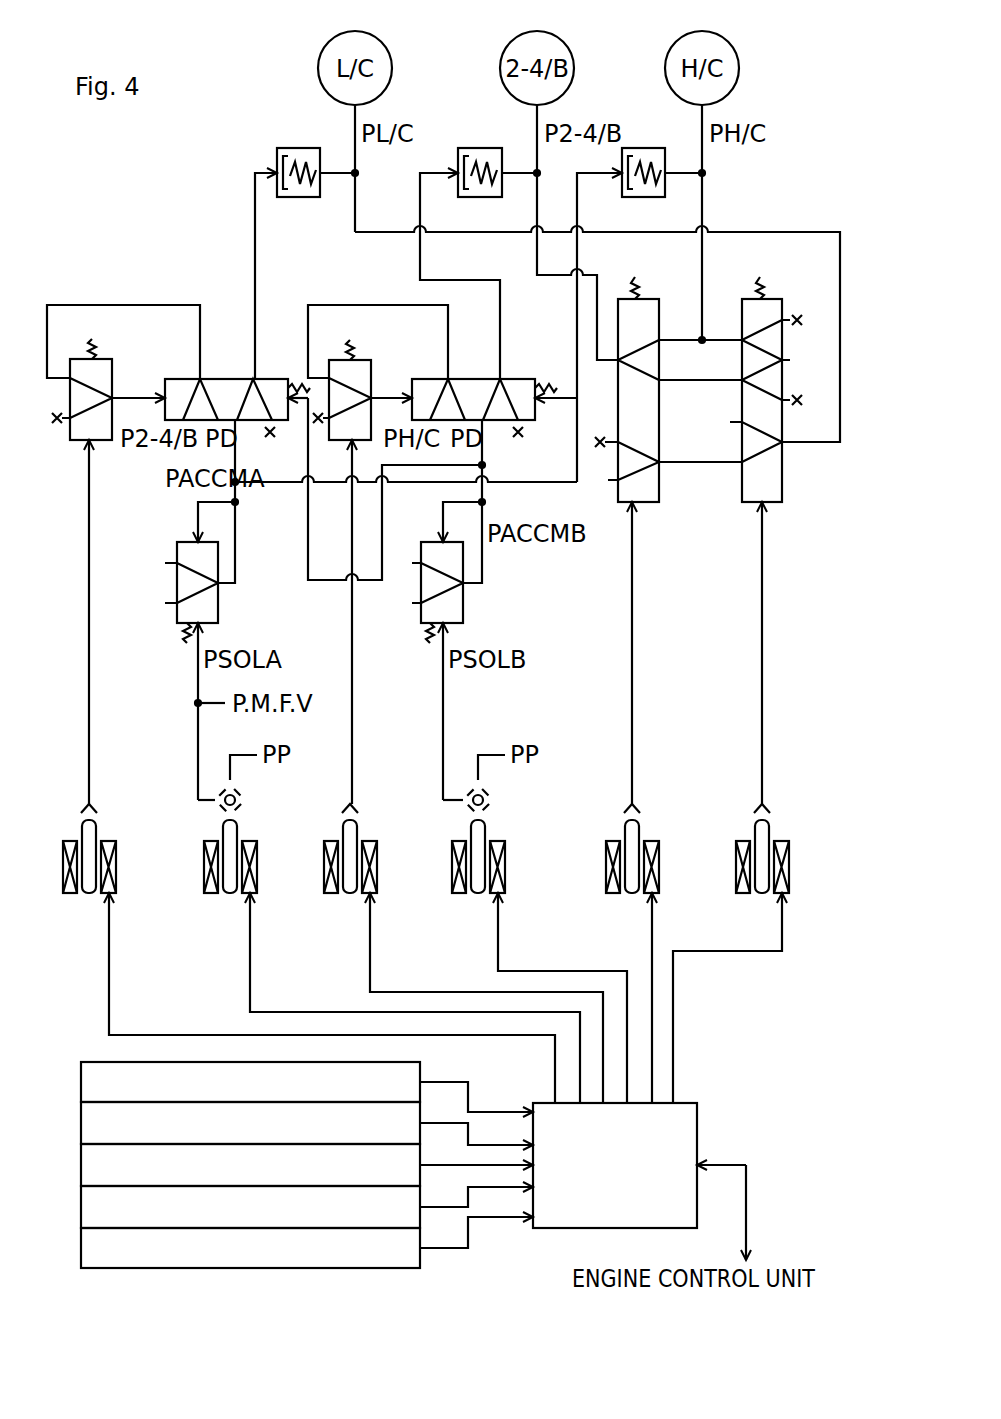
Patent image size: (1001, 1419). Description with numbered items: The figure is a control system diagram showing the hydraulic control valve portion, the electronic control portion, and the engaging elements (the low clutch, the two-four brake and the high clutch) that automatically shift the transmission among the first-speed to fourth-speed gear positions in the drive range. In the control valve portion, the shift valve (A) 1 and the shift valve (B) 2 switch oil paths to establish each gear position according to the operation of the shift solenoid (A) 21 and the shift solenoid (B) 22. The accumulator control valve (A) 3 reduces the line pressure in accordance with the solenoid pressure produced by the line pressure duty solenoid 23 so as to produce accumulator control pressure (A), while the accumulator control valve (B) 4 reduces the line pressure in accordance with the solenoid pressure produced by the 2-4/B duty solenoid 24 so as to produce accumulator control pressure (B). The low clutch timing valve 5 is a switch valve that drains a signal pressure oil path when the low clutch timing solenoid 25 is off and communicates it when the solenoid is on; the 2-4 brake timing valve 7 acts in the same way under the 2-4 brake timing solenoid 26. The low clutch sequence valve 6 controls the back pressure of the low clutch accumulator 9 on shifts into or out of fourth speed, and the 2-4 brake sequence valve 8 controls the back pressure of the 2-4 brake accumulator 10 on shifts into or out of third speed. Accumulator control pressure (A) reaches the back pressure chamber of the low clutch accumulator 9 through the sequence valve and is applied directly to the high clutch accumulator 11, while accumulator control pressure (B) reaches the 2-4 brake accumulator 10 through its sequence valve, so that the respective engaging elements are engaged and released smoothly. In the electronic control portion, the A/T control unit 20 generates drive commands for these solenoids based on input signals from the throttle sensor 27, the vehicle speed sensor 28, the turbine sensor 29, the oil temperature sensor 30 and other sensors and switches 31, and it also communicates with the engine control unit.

The shift valve (A) 1 is at (650, 299).
The shift valve (B) 2 is at (775, 299).
The accumulator control valve (A) 3 is at (218, 603).
The accumulator control valve (B) 4 is at (463, 603).
The low clutch timing valve 5 is at (112, 375).
The low clutch sequence valve 6 is at (266, 379).
The 2-4 brake timing valve 7 is at (371, 375).
The 2-4 brake sequence valve 8 is at (514, 379).
The low clutch accumulator 9 is at (293, 148).
The 2-4 brake accumulator 10 is at (478, 148).
The high clutch accumulator 11 is at (643, 148).
The A/T control unit 20 is at (697, 1132).
The shift solenoid (A) 21 is at (652, 841).
The shift solenoid (B) 22 is at (782, 841).
The line pressure duty solenoid 23 is at (250, 841).
The 2-4/B duty solenoid 24 is at (498, 841).
The low clutch timing solenoid 25 is at (108, 841).
The 2-4 brake timing solenoid 26 is at (370, 841).
The throttle sensor 27 is at (81, 1083).
The vehicle speed sensor 28 is at (81, 1124).
The turbine sensor 29 is at (81, 1166).
The oil temperature sensor 30 is at (81, 1208).
The other sensors and switches 31 is at (81, 1249).